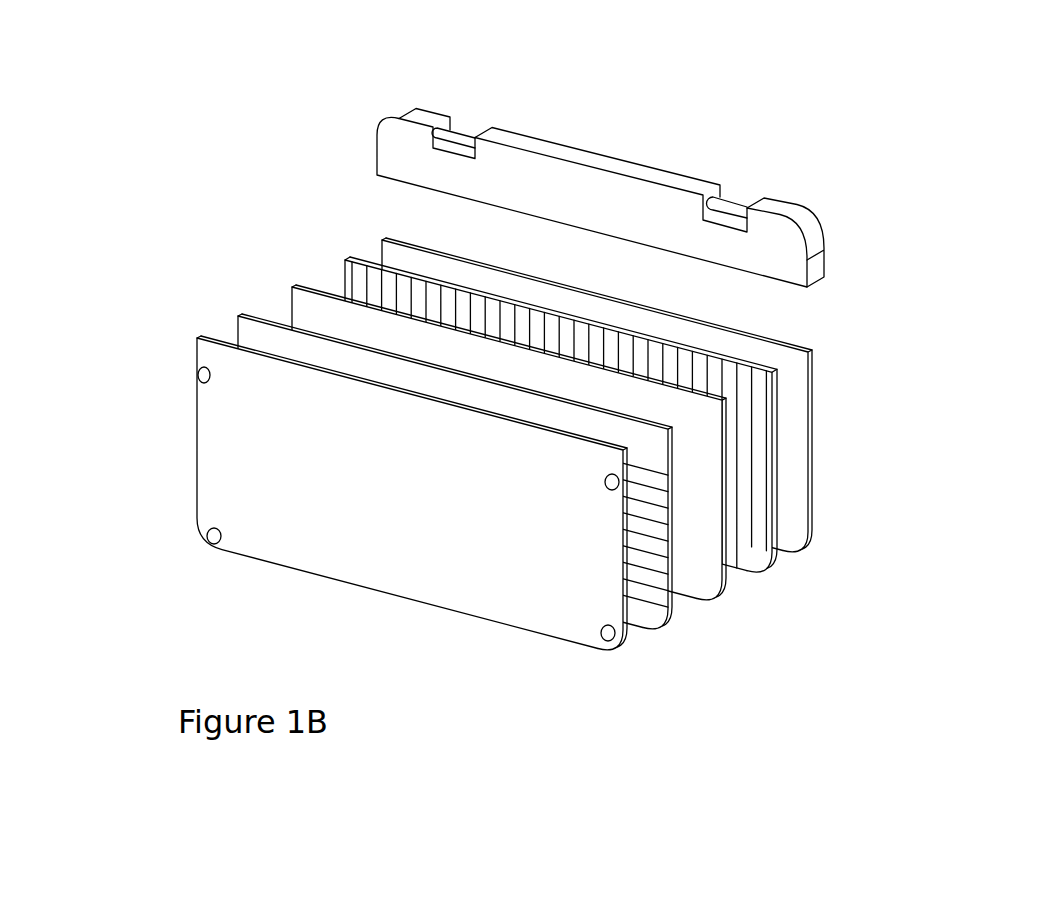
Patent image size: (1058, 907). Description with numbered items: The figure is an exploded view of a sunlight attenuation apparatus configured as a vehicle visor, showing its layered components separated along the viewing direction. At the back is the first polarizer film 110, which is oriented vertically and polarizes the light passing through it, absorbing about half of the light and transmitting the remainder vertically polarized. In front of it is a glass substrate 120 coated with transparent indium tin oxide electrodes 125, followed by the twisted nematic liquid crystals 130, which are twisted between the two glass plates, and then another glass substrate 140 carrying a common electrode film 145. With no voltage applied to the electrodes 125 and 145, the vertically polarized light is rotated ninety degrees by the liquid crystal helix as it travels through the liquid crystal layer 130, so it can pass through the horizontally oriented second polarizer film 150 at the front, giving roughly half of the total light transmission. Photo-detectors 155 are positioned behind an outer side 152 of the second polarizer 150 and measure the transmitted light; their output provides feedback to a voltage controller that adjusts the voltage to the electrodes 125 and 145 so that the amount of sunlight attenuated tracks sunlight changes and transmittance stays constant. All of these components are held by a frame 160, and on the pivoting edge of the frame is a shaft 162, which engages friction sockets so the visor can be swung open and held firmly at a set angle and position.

The first polarizer film 110 is at (809, 355).
The glass substrate 120 is at (597, 358).
The transparent indium tin oxide electrodes 125 is at (698, 380).
The twisted nematic liquid crystals 130 is at (285, 293).
The glass substrate 140 is at (483, 437).
The common electrode film 145 is at (657, 471).
The second polarizer film 150 is at (342, 478).
The outer side 152 is at (307, 548).
The photo-detectors 155 is at (207, 533).
The frame 160 is at (652, 159).
The shaft 162 is at (462, 126).